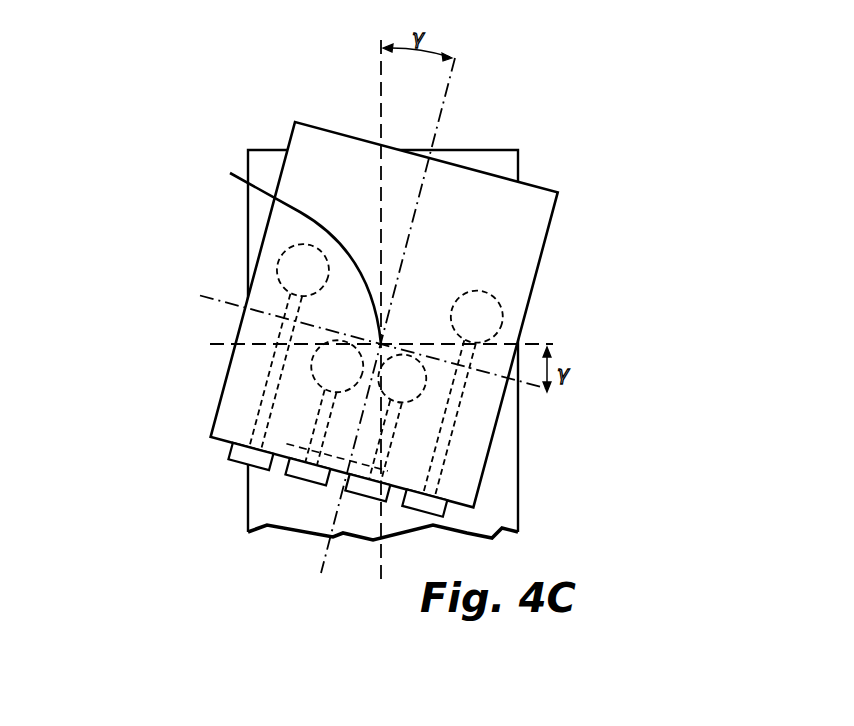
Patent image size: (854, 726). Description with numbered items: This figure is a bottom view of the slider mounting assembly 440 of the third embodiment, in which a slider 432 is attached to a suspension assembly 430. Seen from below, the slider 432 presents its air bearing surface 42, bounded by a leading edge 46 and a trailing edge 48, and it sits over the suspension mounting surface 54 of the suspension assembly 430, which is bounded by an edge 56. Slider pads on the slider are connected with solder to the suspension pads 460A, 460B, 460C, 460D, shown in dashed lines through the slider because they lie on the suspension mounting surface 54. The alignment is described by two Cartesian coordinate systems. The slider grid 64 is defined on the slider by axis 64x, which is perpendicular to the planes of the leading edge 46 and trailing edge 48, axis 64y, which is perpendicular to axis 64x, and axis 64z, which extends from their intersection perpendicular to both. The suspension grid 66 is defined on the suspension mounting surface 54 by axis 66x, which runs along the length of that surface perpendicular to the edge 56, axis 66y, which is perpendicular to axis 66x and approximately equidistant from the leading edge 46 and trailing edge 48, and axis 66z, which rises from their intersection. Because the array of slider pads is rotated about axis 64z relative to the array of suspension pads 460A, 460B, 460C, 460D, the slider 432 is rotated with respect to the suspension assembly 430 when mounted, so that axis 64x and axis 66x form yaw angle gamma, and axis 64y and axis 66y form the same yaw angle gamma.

The air bearing surface 42 is at (401, 328).
The leading edge 46 is at (543, 188).
The trailing edge 48 is at (465, 506).
The suspension mounting surface 54 is at (508, 503).
The edge 56 is at (409, 326).
The slider grid 64 is at (395, 303).
The axis 64x is at (449, 82).
The axis 64y is at (527, 387).
The axis 64z is at (300, 212).
The suspension grid 66 is at (365, 310).
The axis 66x is at (381, 110).
The axis 66y is at (543, 344).
The axis 66z is at (259, 249).
The suspension assembly 430 is at (447, 152).
The slider 432 is at (552, 218).
The slider mounting assembly 440 is at (576, 90).
The suspension pad 460A is at (275, 372).
The suspension pad 460B is at (320, 428).
The suspension pad 460C is at (385, 441).
The suspension pad 460D is at (449, 418).